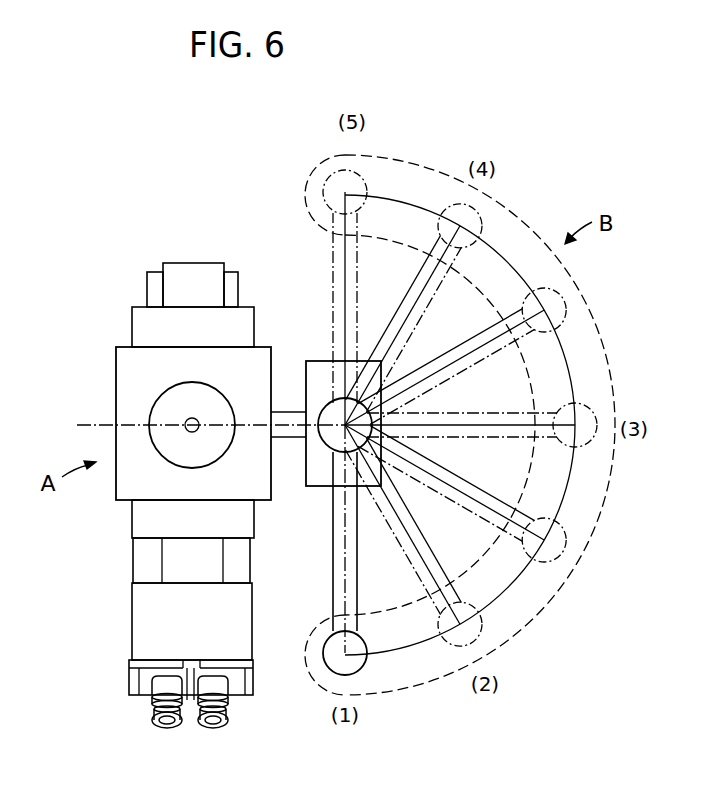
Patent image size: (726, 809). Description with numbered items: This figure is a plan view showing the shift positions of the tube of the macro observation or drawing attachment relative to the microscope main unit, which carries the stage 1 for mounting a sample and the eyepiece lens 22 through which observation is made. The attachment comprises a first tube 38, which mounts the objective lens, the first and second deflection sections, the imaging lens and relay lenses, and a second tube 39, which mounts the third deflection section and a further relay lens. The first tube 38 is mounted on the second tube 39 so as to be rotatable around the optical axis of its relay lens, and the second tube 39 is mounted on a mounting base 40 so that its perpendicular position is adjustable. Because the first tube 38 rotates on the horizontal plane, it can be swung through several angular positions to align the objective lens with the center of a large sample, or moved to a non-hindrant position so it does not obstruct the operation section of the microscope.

The stage 1 is at (258, 352).
The eyepiece lens 22 is at (205, 728).
The first tube 38 is at (331, 558).
The second tube 39 is at (280, 410).
The mounting base 40 is at (318, 372).